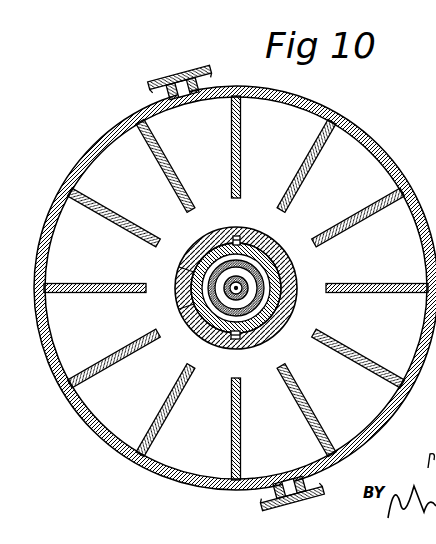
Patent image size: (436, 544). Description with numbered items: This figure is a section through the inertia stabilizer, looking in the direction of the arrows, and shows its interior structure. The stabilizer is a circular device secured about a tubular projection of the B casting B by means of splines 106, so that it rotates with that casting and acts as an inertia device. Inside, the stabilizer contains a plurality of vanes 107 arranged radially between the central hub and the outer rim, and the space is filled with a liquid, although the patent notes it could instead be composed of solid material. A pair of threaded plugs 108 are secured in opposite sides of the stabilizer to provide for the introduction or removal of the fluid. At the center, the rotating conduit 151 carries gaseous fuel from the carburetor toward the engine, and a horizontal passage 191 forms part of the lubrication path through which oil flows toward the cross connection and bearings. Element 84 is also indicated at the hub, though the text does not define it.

The hub 84 is at (182, 306).
The splines 106 is at (237, 240).
The vanes 107 is at (400, 286).
The threaded plugs 108 is at (189, 72).
The rotating conduit 151 is at (194, 272).
The horizontal passage 191 is at (246, 344).
The B casting B is at (287, 243).